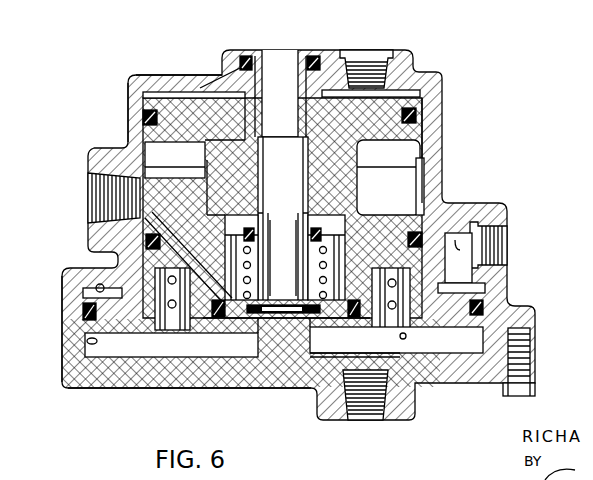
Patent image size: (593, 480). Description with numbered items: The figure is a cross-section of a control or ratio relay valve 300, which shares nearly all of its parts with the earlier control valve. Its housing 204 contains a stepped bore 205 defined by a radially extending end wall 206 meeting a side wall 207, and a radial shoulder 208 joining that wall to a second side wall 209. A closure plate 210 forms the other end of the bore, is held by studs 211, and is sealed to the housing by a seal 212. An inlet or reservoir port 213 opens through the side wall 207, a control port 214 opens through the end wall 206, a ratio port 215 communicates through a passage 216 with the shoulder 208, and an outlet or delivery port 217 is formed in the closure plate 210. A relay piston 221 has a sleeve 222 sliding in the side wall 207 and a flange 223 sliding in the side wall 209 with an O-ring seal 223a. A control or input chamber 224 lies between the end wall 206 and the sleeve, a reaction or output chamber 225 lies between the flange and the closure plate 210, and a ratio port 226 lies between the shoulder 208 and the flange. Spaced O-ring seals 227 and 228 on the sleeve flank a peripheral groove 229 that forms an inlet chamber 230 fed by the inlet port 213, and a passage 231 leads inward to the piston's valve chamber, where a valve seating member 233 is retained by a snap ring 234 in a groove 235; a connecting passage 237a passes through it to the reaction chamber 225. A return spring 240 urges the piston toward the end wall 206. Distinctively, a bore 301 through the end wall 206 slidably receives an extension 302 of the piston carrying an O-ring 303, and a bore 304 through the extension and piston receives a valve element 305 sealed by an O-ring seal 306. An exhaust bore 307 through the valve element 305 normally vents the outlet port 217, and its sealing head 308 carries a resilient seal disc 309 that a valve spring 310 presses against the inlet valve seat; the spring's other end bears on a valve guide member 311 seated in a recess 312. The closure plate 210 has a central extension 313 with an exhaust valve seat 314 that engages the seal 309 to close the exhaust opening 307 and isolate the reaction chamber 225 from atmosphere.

The control or ratio relay valve 300 is at (492, 66).
The housing 204 is at (432, 121).
The stepped bore 205 is at (430, 152).
The end wall 206 is at (166, 92).
The side wall 207 is at (426, 176).
The shoulder 208 is at (100, 284).
The side wall 209 is at (87, 340).
The closure plate 210 is at (104, 372).
The studs 211 is at (537, 390).
The seal 212 is at (84, 368).
The inlet or reservoir port 213 is at (86, 180).
The control port 214 is at (390, 50).
The control or ratio port 215 is at (500, 224).
The passage 216 is at (457, 243).
The outlet or delivery port 217 is at (390, 412).
The relay piston 221 is at (372, 127).
The sleeve 222 is at (436, 93).
The flange 223 is at (493, 290).
The O-ring seal 223a is at (502, 311).
The control or input chamber 224 is at (191, 92).
The reaction or output chamber 225 is at (146, 350).
The control or ratio port 226 is at (83, 292).
The O-ring seal 227 is at (141, 117).
The O-ring seal 228 is at (146, 246).
The peripheral groove 229 is at (182, 143).
The inlet chamber 230 is at (395, 206).
The passage 231 is at (203, 230).
The valve seating member 233 is at (412, 264).
The snap ring 234 is at (357, 333).
The groove 235 is at (173, 317).
The connecting passage 237a is at (257, 323).
The return spring 240 is at (406, 337).
The bore 301 is at (314, 58).
The extension 302 is at (256, 76).
The O-ring 303 is at (244, 62).
The bore 304 is at (290, 62).
The valve element 305 is at (292, 269).
The O-ring seal 306 is at (314, 228).
The exhaust bore or opening 307 is at (300, 226).
The sealing head 308 is at (344, 320).
The resilient seal or disc 309 is at (292, 298).
The valve spring 310 is at (333, 296).
The valve guide member 311 is at (243, 264).
The recess 312 is at (224, 187).
The extension 313 is at (275, 318).
The exhaust valve seat 314 is at (297, 362).